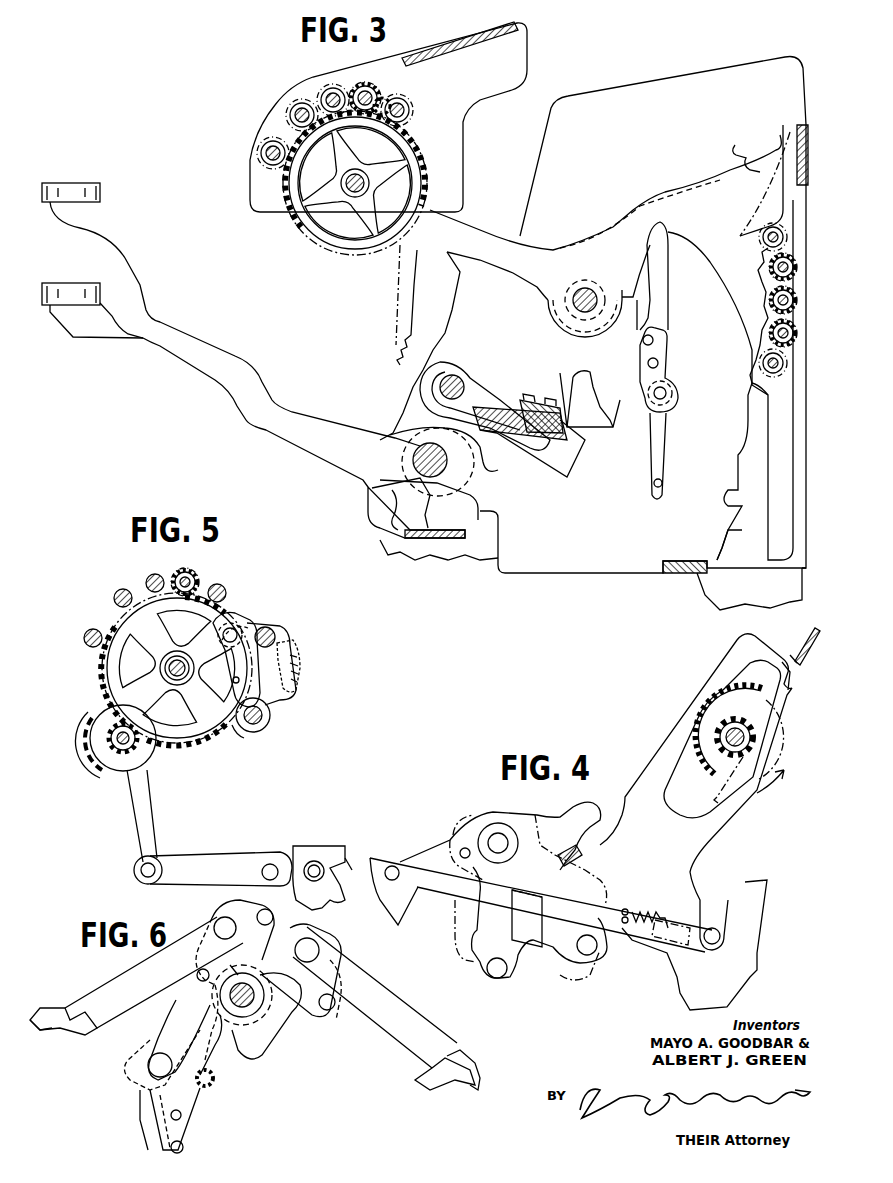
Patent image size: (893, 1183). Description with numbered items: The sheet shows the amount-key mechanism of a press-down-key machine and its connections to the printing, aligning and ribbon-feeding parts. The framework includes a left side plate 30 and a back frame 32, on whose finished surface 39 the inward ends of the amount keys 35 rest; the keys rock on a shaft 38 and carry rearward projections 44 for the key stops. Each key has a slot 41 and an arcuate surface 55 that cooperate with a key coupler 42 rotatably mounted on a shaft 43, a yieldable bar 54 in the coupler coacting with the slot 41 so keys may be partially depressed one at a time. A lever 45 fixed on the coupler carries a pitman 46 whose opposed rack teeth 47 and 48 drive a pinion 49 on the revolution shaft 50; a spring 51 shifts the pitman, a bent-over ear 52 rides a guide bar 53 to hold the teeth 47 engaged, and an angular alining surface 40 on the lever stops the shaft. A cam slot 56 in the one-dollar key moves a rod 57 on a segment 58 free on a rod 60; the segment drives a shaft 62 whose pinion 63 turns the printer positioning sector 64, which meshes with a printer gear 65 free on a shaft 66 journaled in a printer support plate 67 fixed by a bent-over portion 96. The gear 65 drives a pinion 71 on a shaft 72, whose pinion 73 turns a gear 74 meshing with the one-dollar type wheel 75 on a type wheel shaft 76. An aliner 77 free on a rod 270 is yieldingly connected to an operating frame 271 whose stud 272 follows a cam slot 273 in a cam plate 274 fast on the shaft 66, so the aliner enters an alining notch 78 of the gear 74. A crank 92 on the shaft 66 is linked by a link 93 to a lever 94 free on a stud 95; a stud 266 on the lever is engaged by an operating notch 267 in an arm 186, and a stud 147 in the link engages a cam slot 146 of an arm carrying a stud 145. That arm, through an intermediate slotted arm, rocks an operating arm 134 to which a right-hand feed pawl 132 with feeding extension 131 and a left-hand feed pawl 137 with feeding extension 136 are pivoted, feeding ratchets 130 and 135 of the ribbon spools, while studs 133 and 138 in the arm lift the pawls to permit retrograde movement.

In FIG. 3, the left side plate 30 is at (553, 126).
In FIG. 3, the back frame 32 is at (785, 138).
In FIG. 3, the amount keys 35 is at (114, 244).
In FIG. 3, the shaft 38 is at (413, 458).
In FIG. 3, the finished surface 39 is at (680, 560).
In FIG. 4, the angular alining surface 40 is at (765, 880).
In FIG. 3, the slot 41 is at (552, 478).
In FIG. 3, the key coupler 42 is at (520, 440).
In FIG. 4, the key coupler 42 is at (538, 822).
In FIG. 3, the shaft 43 is at (450, 380).
In FIG. 4, the shaft 43 is at (495, 843).
In FIG. 3, the rearward projections 44 is at (720, 525).
In FIG. 4, the lever 45 is at (565, 862).
In FIG. 4, the pitman 46 is at (712, 838).
In FIG. 4, the rack teeth 47 is at (716, 800).
In FIG. 4, the rack teeth 48 is at (695, 770).
In FIG. 4, the pinion 49 is at (748, 755).
In FIG. 4, the revolution shaft 50 is at (750, 733).
In FIG. 4, the spring 51 is at (630, 932).
In FIG. 4, the bent-over ear 52 is at (788, 672).
In FIG. 4, the guide bar 53 is at (800, 652).
In FIG. 3, the bar 54 is at (563, 408).
In FIG. 3, the arcuate surface 55 is at (574, 385).
In FIG. 3, the cam slot 56 is at (651, 486).
In FIG. 3, the rod 57 is at (652, 394).
In FIG. 3, the segment 58 is at (652, 272).
In FIG. 3, the rod 60 is at (574, 302).
In FIG. 3, the shaft 62 is at (766, 268).
In FIG. 3, the pinion 63 is at (760, 254).
In FIG. 3, the printer positioning sector 64 is at (522, 252).
In FIG. 3, the printer gear 65 is at (300, 228).
In FIG. 3, the shaft 66 is at (350, 182).
In FIG. 5, the shaft 66 is at (186, 667).
In FIG. 6, the shaft 66 is at (250, 1010).
In FIG. 3, the printer support plate 67 is at (463, 175).
In FIG. 3, the pinion 71 is at (383, 98).
In FIG. 3, the shaft 72 is at (368, 85).
In FIG. 5, the shaft 72 is at (178, 572).
In FIG. 5, the pinion 73 is at (200, 585).
In FIG. 5, the gear 74 is at (222, 612).
In FIG. 5, the type wheel 75 is at (100, 714).
In FIG. 5, the type wheel shaft 76 is at (110, 739).
In FIG. 5, the aliner 77 is at (282, 699).
In FIG. 5, the alining notches 78 is at (190, 748).
In FIG. 5, the crank 92 is at (135, 663).
In FIG. 6, the crank 92 is at (175, 1040).
In FIG. 5, the link 93 is at (128, 814).
In FIG. 6, the link 93 is at (165, 1102).
In FIG. 5, the lever 94 is at (218, 862).
In FIG. 5, the stud 95 is at (272, 862).
In FIG. 3, the bent-over portion 96 is at (480, 36).
In FIG. 6, the ratchet 130 is at (458, 1078).
In FIG. 6, the feeding extension 131 is at (420, 1070).
In FIG. 6, the right-hand feed pawl 132 is at (392, 1045).
In FIG. 6, the stud 133 is at (327, 1020).
In FIG. 6, the operating arm 134 is at (285, 1000).
In FIG. 6, the ratchet 135 is at (42, 1030).
In FIG. 6, the feeding extension 136 is at (75, 1000).
In FIG. 6, the left-hand feed pawl 137 is at (140, 978).
In FIG. 6, the stud 138 is at (200, 988).
In FIG. 6, the stud 145 is at (240, 905).
In FIG. 6, the cam slot 146 is at (183, 1114).
In FIG. 6, the stud 147 is at (185, 1140).
In FIG. 5, the arm 186 is at (328, 900).
In FIG. 5, the stud 266 is at (320, 860).
In FIG. 5, the operating notch 267 is at (345, 858).
In FIG. 5, the rod 270 is at (276, 640).
In FIG. 5, the operating frame 271 is at (292, 656).
In FIG. 5, the stud 272 is at (238, 630).
In FIG. 5, the cam slot 273 is at (234, 682).
In FIG. 5, the cam plate 274 is at (232, 727).